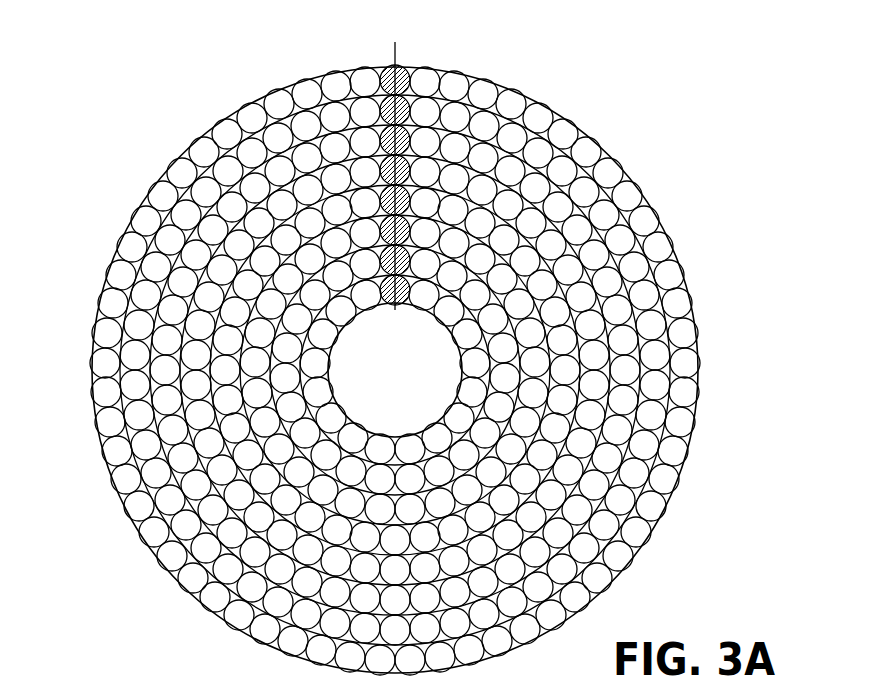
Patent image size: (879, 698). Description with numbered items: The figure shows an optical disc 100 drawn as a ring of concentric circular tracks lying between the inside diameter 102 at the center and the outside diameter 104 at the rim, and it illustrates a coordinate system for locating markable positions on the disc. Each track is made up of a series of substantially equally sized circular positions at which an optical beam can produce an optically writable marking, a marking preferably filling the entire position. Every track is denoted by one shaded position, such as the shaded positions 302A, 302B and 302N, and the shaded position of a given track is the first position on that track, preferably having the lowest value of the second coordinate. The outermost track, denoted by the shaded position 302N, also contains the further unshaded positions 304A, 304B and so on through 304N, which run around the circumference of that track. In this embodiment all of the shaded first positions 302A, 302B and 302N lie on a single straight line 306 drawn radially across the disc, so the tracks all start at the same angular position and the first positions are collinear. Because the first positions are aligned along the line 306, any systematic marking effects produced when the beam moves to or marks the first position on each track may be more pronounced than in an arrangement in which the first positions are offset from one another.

The optical disc 100 is at (84, 568).
The inside diameter 102 is at (337, 400).
The outside diameter 104 is at (118, 500).
The shaded position 302A is at (392, 303).
The shaded position 302B is at (402, 305).
The shaded position 302N is at (410, 64).
The position 304A is at (428, 72).
The position 304B is at (458, 77).
The position 304N is at (360, 76).
The straight line 306 is at (391, 68).